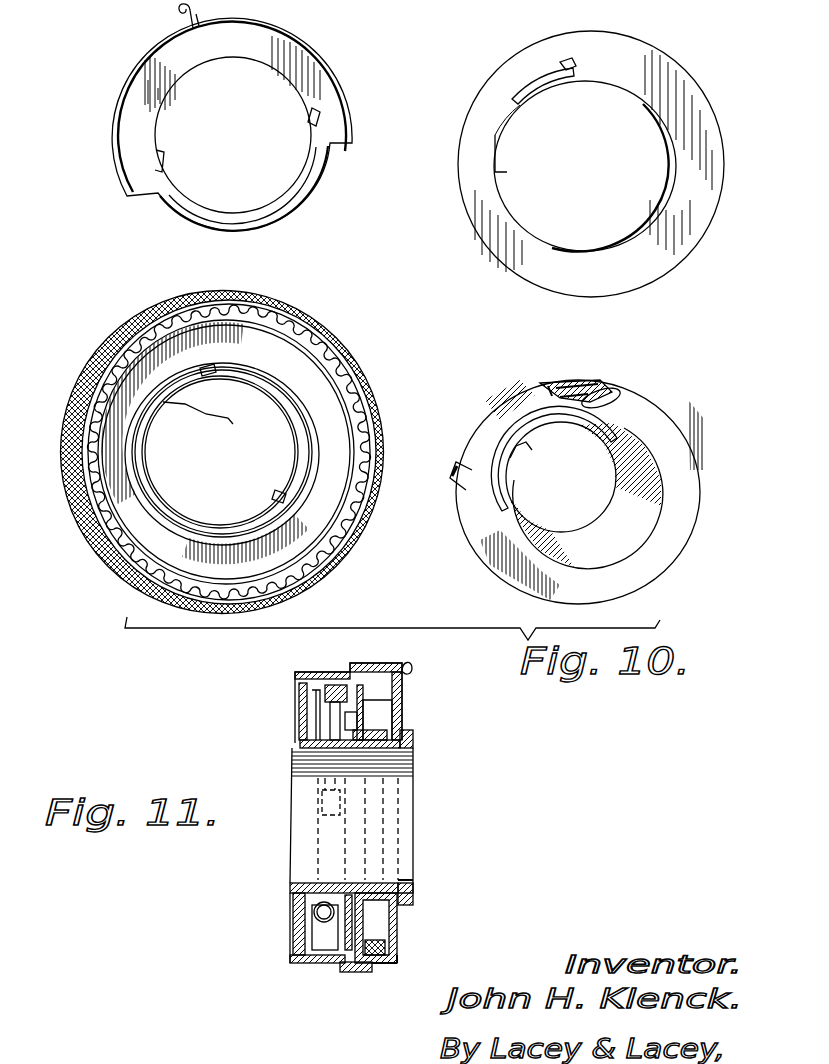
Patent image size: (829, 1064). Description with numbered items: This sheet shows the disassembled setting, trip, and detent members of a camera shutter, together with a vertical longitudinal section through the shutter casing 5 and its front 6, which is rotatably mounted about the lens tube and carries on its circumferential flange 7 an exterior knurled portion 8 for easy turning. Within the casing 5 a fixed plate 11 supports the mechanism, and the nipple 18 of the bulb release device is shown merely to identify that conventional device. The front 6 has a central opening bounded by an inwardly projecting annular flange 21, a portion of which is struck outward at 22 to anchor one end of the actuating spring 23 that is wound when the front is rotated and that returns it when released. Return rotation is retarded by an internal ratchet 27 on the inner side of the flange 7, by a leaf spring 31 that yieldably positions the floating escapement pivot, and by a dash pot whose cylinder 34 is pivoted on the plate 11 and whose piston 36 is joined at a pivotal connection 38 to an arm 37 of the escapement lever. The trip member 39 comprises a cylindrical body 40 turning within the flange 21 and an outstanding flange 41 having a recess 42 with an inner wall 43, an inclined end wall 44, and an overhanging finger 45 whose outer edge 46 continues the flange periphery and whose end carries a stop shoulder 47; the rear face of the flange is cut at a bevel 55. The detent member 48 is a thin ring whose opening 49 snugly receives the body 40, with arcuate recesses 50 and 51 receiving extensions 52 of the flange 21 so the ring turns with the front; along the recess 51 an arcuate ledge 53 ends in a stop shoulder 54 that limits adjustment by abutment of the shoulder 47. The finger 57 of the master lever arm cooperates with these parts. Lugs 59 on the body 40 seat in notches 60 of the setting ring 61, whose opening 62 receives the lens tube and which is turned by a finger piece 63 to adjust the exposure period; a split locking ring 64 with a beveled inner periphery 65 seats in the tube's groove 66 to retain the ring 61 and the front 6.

In FIG. 11, the shutter casing 5 is at (301, 676).
In FIG. 10, the shutter casing front 6 is at (290, 370).
In FIG. 11, the shutter casing front 6 is at (396, 962).
In FIG. 10, the circumferential flange 7 is at (105, 332).
In FIG. 11, the circumferential flange 7 is at (386, 966).
In FIG. 10, the knurled portion 8 is at (140, 312).
In FIG. 11, the fixed plate 11 is at (296, 930).
In FIG. 11, the nipple 18 is at (355, 966).
In FIG. 10, the annular flange 21 is at (247, 526).
In FIG. 11, the annular flange 21 is at (410, 732).
In FIG. 10, the struck-out portion 22 is at (278, 496).
In FIG. 10, the actuating spring 23 is at (206, 372).
In FIG. 11, the actuating spring 23 is at (375, 927).
In FIG. 10, the internal ratchet 27 is at (352, 420).
In FIG. 11, the leaf spring 31 is at (336, 700).
In FIG. 11, the cylinder 34 is at (292, 958).
In FIG. 11, the piston 36 is at (325, 932).
In FIG. 11, the arm 37 is at (300, 884).
In FIG. 11, the pivotal connection 38 is at (332, 958).
In FIG. 10, the trip member 39 is at (697, 514).
In FIG. 10, the cylindrical body 40 is at (675, 485).
In FIG. 11, the cylindrical body 40 is at (380, 888).
In FIG. 10, the circumferential flange 41 is at (675, 545).
In FIG. 11, the circumferential flange 41 is at (348, 932).
In FIG. 10, the recess 42 is at (524, 413).
In FIG. 10, the inner wall 43 is at (538, 440).
In FIG. 10, the inclined end wall 44 is at (497, 432).
In FIG. 10, the overhanging finger 45 is at (585, 392).
In FIG. 11, the overhanging finger 45 is at (362, 718).
In FIG. 10, the outer edge 46 is at (572, 394).
In FIG. 10, the stop shoulder 47 is at (560, 398).
In FIG. 10, the detent member 48 is at (692, 113).
In FIG. 11, the detent member 48 is at (376, 672).
In FIG. 10, the opening 49 is at (645, 117).
In FIG. 10, the arcuate recess 50 is at (660, 215).
In FIG. 10, the arcuate recess 51 is at (510, 132).
In FIG. 10, the extensions 52 is at (285, 440).
In FIG. 10, the arcuate ledge 53 is at (527, 93).
In FIG. 11, the arcuate ledge 53 is at (362, 726).
In FIG. 10, the stop shoulder 54 is at (568, 62).
In FIG. 10, the bevel 55 is at (616, 404).
In FIG. 11, the finger 57 is at (361, 700).
In FIG. 10, the lugs 59 is at (455, 472).
In FIG. 10, the notches 60 is at (318, 118).
In FIG. 10, the setting ring 61 is at (265, 42).
In FIG. 11, the setting ring 61 is at (400, 720).
In FIG. 10, the opening 62 is at (290, 187).
In FIG. 10, the finger piece 63 is at (192, 22).
In FIG. 11, the finger piece 63 is at (410, 677).
In FIG. 11, the split locking ring 64 is at (406, 900).
In FIG. 11, the beveled inner periphery 65 is at (413, 740).
In FIG. 11, the groove 66 is at (412, 884).